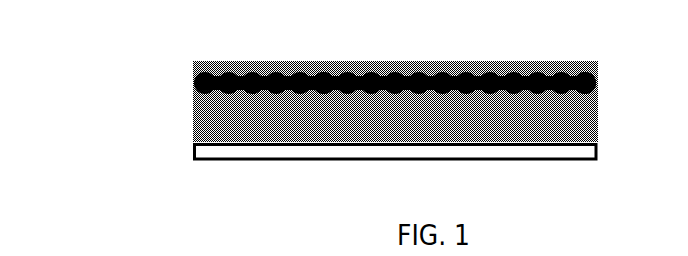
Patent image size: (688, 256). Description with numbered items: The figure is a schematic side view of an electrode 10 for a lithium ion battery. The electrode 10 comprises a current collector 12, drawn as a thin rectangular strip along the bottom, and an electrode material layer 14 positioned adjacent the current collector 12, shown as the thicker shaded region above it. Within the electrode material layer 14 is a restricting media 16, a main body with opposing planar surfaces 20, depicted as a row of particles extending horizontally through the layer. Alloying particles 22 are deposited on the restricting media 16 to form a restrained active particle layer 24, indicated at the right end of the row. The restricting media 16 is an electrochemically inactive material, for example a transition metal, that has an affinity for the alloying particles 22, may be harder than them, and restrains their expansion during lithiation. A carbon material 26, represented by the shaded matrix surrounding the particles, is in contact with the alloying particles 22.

The electrode 10 is at (97, 67).
The current collector 12 is at (193, 158).
The electrode material layer 14 is at (188, 62).
The restricting media 16 is at (550, 75).
The opposing planar surfaces 20 is at (417, 73).
The alloying particles 22 is at (318, 72).
The restrained active particle layer 24 is at (598, 83).
The carbon material 26 is at (247, 63).